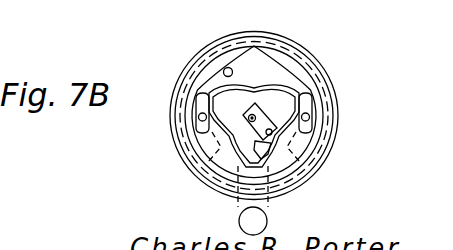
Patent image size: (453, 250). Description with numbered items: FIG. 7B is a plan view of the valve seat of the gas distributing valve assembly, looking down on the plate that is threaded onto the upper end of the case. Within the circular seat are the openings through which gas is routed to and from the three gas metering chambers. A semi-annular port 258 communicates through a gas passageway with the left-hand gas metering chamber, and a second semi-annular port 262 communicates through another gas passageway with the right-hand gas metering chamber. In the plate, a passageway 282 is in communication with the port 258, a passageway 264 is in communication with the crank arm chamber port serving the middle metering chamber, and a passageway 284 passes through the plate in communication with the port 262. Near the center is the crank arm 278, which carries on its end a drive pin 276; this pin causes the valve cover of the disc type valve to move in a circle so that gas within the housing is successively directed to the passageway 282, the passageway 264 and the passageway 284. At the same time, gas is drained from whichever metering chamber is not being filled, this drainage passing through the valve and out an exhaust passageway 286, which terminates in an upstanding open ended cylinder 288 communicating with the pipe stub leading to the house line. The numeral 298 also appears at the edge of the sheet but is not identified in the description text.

The semi-annular port 258 is at (187, 66).
The semi-annular port 262 is at (322, 75).
The passageway 264 is at (224, 75).
The drive pin 276 is at (290, 172).
The crank arm 278 is at (256, 112).
The passageway 282 is at (198, 117).
The passageway 284 is at (310, 118).
The exhaust passageway 286 is at (237, 202).
The upstanding open ended cylinder 288 is at (239, 220).
The reference numeral (adjacent figure) 298 is at (16, 243).